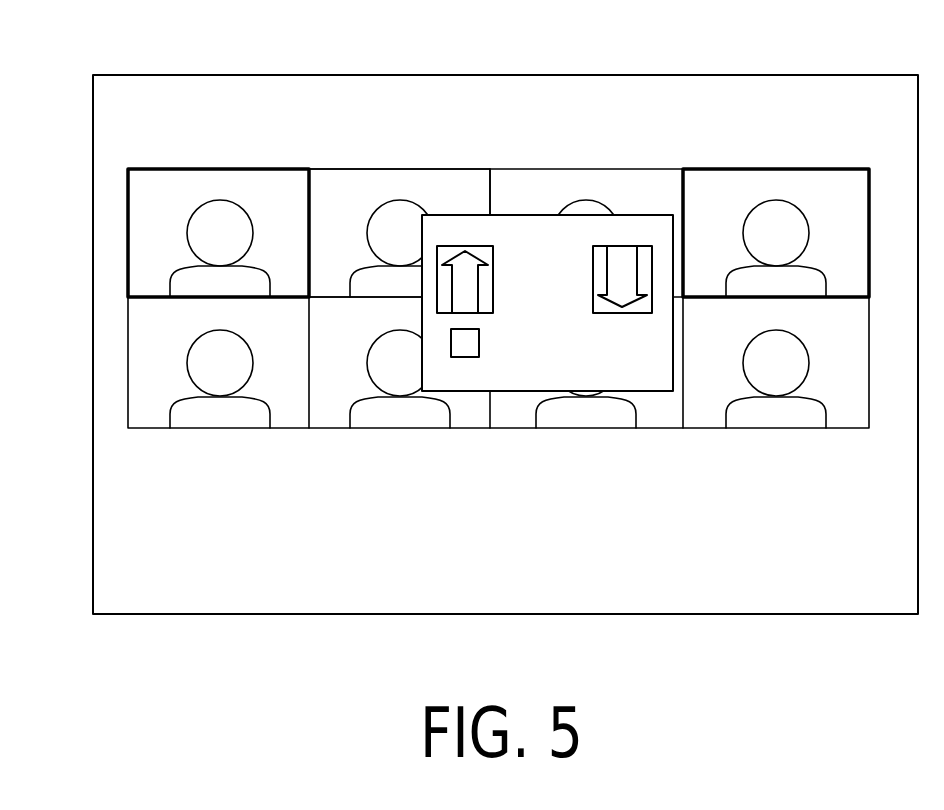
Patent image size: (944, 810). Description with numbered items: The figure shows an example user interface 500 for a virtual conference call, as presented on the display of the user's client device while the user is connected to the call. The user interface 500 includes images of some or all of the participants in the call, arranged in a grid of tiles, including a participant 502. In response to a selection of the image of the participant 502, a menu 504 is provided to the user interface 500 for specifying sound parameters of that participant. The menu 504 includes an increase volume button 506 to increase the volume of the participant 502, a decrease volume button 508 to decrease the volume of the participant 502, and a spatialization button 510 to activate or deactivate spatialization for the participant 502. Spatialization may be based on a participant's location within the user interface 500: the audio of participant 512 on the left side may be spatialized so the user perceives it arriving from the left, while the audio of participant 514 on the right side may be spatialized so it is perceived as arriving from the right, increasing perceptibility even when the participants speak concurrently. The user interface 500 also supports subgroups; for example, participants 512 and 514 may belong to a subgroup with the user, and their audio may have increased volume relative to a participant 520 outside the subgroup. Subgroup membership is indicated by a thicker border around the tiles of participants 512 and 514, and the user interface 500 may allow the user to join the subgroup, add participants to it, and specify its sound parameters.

The user interface 500 is at (192, 75).
The participant 502 is at (366, 169).
The menu 504 is at (527, 215).
The increase volume button 506 is at (471, 246).
The decrease volume button 508 is at (647, 250).
The spatialization button 510 is at (452, 346).
The participant 512 is at (197, 169).
The participant 514 is at (830, 169).
The participant 520 is at (125, 385).